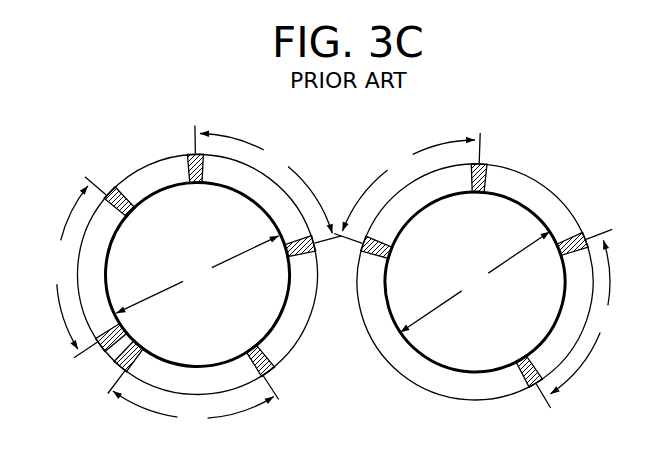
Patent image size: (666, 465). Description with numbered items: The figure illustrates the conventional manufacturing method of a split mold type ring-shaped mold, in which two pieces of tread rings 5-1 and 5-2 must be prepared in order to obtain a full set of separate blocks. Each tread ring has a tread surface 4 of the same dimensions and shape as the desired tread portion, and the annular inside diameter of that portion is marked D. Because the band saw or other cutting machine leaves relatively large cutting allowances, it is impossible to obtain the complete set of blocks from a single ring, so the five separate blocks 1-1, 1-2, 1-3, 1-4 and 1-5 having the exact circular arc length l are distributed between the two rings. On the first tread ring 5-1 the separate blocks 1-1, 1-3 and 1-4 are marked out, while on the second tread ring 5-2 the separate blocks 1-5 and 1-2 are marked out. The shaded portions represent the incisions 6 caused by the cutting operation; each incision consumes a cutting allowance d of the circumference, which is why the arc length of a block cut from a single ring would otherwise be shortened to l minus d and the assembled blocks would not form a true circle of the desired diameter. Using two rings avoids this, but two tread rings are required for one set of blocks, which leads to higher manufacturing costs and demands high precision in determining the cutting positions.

The tread ring 5-1 is at (177, 273).
The tread ring 5-2 is at (497, 257).
The separate block 1-1 is at (233, 170).
The separate block 1-2 is at (577, 278).
The separate block 1-3 is at (155, 378).
The separate block 1-4 is at (88, 306).
The separate block 1-5 is at (432, 183).
The tread surface 4 is at (522, 207).
The incision 6 is at (127, 208).